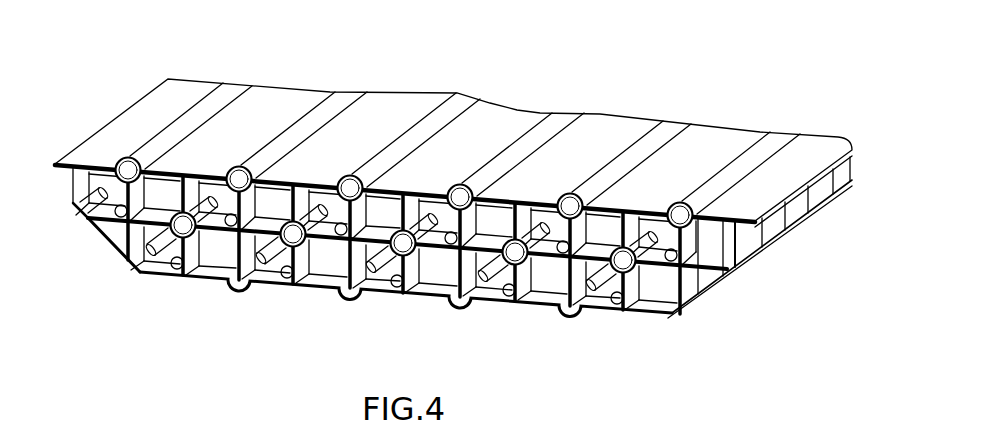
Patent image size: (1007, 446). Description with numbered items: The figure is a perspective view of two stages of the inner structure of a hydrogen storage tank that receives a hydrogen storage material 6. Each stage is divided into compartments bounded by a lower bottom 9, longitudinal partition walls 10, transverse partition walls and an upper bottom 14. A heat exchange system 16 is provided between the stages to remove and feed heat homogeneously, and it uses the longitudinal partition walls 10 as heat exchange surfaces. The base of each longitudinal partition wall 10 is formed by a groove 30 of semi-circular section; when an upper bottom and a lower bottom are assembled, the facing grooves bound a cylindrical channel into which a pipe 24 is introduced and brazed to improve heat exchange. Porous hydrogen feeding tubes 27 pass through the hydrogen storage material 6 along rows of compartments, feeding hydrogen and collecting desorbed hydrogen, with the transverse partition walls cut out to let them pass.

The heat exchange system 16 is at (146, 109).
The pipe 24 is at (665, 130).
The upper bottom 14 is at (740, 230).
The hydrogen storage material 6 is at (218, 257).
The groove 30 is at (572, 302).
The lower bottom 9 is at (432, 290).
The porous hydrogen feeding tube 27 is at (612, 305).
The longitudinal partition wall 10 is at (330, 282).